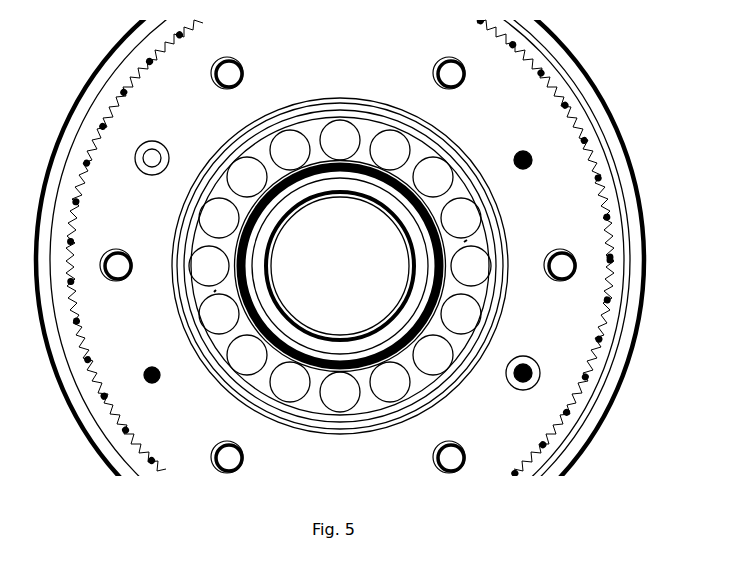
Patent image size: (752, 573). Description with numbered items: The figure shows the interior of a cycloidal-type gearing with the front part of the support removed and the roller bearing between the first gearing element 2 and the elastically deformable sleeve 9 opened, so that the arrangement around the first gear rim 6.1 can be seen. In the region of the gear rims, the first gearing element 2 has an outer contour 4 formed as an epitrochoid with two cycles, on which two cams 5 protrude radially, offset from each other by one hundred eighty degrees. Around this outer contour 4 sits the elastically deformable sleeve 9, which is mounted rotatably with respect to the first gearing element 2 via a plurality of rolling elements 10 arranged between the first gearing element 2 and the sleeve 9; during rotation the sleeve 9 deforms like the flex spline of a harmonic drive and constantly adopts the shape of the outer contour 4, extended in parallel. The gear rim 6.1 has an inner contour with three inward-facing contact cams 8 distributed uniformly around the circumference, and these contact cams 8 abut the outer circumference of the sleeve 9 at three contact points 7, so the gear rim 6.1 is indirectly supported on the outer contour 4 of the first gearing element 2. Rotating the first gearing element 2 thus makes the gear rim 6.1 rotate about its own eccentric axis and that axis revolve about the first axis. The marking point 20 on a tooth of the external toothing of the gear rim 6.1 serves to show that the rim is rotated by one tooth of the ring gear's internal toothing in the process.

The first gearing element 2 is at (326, 190).
The outer contour 4 is at (456, 180).
The cams 5 is at (472, 230).
The first gear rim 6.1 is at (572, 380).
The contact points 7 is at (418, 128).
The contact cams 8 is at (450, 125).
The elastically deformable sleeve 9 is at (498, 300).
The rolling elements 10 is at (340, 380).
The marking point 20 is at (612, 265).